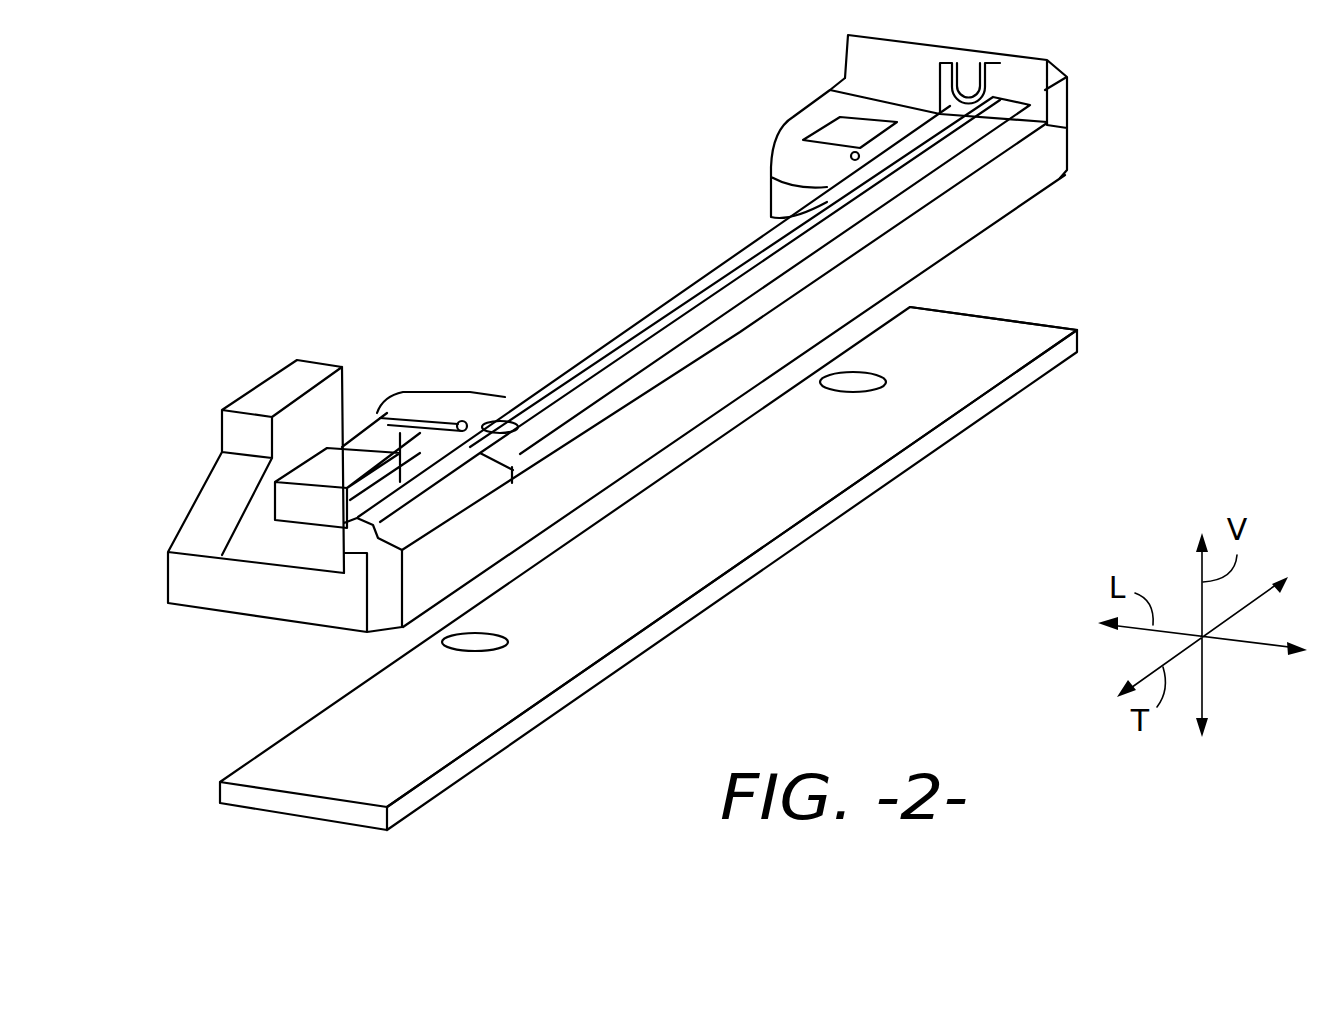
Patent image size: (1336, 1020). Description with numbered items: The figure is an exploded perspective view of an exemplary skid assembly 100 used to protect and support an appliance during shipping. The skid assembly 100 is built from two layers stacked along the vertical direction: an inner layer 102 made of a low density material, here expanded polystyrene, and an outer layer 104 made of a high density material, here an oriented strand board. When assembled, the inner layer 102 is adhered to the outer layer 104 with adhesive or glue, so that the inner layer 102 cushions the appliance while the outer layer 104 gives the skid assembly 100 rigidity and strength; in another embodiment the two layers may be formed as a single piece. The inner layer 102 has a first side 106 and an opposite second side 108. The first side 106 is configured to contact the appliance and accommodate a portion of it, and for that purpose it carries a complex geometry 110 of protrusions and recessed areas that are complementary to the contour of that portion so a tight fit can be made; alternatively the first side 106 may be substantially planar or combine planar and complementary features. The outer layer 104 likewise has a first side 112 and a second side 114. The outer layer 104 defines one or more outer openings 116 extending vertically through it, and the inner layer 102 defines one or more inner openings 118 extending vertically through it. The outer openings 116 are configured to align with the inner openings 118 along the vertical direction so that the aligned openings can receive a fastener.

The skid assembly 100 is at (345, 204).
The inner layer 102 is at (168, 582).
The outer layer 104 is at (216, 802).
The first side 106 is at (505, 422).
The second side 108 is at (1030, 200).
The complex geometry 110 is at (774, 127).
The first side 112 is at (1003, 345).
The second side 114 is at (780, 558).
The outer openings 116 is at (488, 637).
The inner openings 118 is at (853, 148).